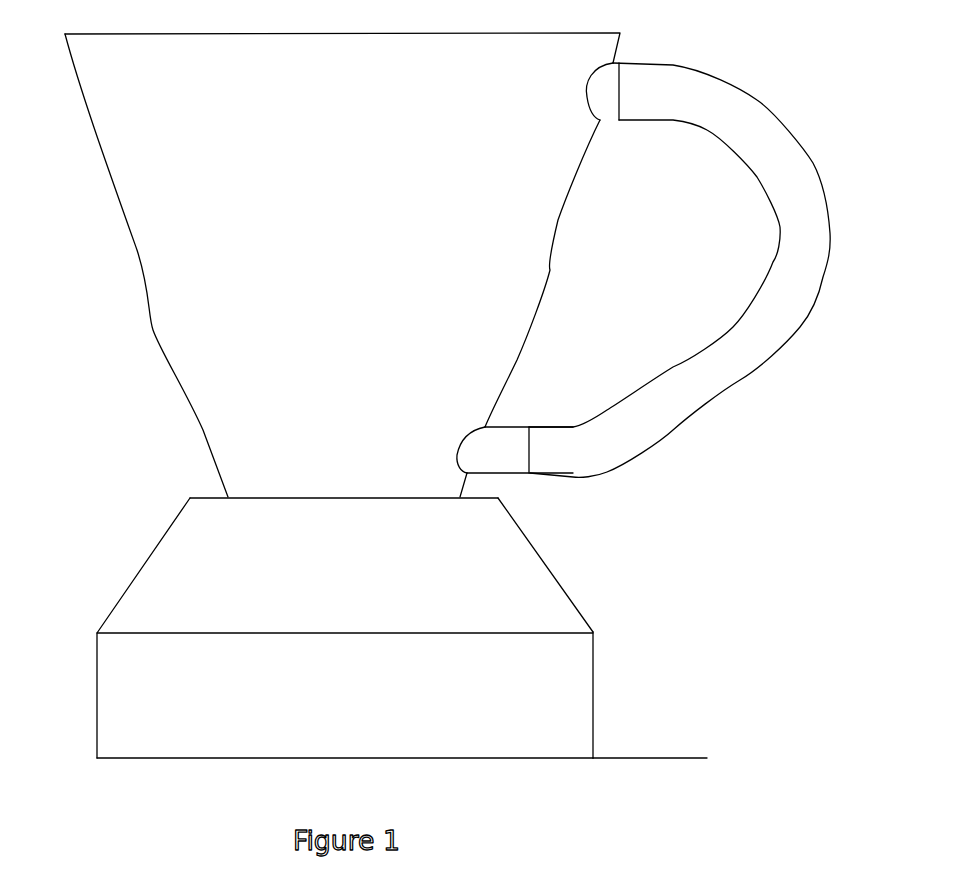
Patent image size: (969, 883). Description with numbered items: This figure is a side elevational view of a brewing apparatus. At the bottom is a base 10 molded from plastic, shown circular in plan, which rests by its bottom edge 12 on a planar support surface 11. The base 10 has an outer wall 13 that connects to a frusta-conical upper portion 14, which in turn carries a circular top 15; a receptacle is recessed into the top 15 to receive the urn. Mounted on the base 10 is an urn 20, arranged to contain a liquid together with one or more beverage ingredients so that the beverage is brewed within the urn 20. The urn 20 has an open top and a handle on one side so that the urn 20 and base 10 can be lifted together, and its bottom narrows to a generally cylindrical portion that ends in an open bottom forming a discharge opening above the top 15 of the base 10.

The urn 20 is at (102, 257).
The base 10 is at (364, 671).
The planar support surface 11 is at (637, 759).
The bottom edge 12 is at (127, 759).
The outer wall 13 is at (602, 679).
The frusta-conical upper portion 14 is at (548, 562).
The circular top 15 is at (482, 499).